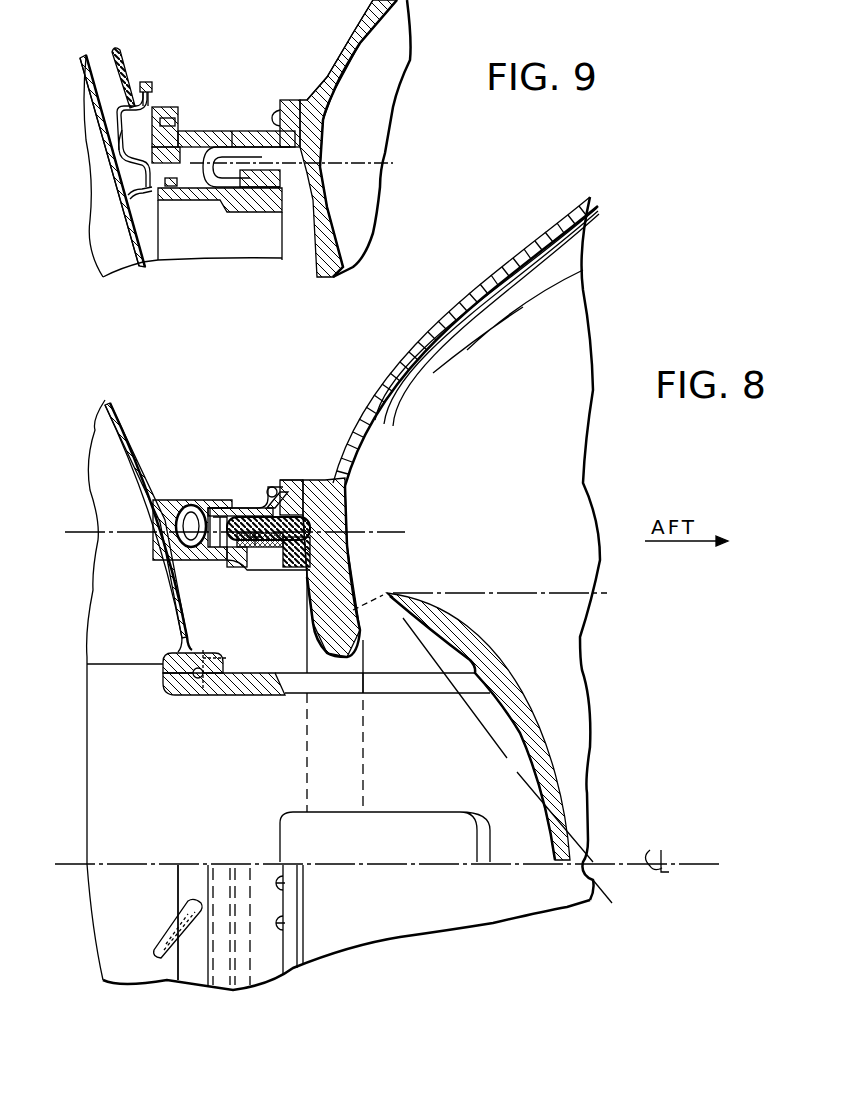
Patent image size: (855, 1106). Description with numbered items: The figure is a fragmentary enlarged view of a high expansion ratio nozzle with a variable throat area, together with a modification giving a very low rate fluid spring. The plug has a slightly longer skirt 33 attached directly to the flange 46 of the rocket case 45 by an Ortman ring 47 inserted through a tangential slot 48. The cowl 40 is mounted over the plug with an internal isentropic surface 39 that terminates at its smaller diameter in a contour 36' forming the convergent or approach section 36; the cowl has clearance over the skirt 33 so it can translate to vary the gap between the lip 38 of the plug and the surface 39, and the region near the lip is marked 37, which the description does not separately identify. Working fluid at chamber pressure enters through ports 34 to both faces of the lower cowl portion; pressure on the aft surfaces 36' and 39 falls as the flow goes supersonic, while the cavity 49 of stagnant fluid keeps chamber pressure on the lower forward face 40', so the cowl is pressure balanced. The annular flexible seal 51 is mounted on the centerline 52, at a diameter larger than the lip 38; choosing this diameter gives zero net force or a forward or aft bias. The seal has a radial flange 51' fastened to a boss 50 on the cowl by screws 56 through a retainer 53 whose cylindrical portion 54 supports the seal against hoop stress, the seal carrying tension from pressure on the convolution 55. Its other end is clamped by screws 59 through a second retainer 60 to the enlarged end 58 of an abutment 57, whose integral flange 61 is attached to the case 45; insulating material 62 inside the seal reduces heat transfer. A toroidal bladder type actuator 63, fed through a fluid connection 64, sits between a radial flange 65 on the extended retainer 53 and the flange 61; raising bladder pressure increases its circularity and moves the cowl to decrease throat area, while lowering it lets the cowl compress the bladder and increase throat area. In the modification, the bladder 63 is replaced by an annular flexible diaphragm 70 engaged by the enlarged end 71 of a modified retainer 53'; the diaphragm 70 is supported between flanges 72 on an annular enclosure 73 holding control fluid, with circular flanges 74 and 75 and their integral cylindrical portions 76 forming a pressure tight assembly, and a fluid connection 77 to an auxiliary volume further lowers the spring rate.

In FIG. 8, the skirt 33 is at (165, 689).
In FIG. 8, the ports 34 is at (305, 694).
In FIG. 8, the convergent or approach section 36 is at (490, 727).
In FIG. 8, the contour 36' is at (387, 679).
In FIG. 8, the cowl lip 37 is at (385, 600).
In FIG. 8, the lip 38 is at (388, 593).
In FIG. 8, the internal isentropic surface 39 is at (365, 430).
In FIG. 8, the cowl 40 is at (461, 340).
In FIG. 8, the lower forward face surface 40' is at (318, 567).
In FIG. 8, the rocket case 45 is at (130, 447).
In FIG. 8, the flange 46 is at (170, 655).
In FIG. 8, the Ortman ring 47 is at (220, 690).
In FIG. 8, the tangential slot 48 is at (215, 661).
In FIG. 8, the cavity 49 is at (240, 637).
In FIG. 8, the boss 50 is at (300, 485).
In FIG. 9, the annular flexible seal 51 is at (236, 118).
In FIG. 8, the annular flexible seal 51 is at (220, 501).
In FIG. 8, the radial flange 51' is at (292, 446).
In FIG. 9, the centerline 52 is at (190, 161).
In FIG. 8, the centerline 52 is at (238, 528).
In FIG. 8, the retainer 53 is at (248, 474).
In FIG. 9, the retainer 53' is at (288, 107).
In FIG. 8, the cylindrical portion 54 is at (243, 505).
In FIG. 8, the convolution 55 is at (230, 515).
In FIG. 8, the screws 56 is at (268, 490).
In FIG. 8, the abutment 57 is at (183, 560).
In FIG. 8, the enlarged end 58 is at (255, 572).
In FIG. 8, the screws 59 is at (305, 545).
In FIG. 8, the second retainer 60 is at (305, 530).
In FIG. 8, the integral flange 61 is at (160, 547).
In FIG. 8, the insulating material 62 is at (305, 560).
In FIG. 8, the bladder type actuator 63 is at (190, 505).
In FIG. 8, the fluid connection 64 is at (172, 937).
In FIG. 8, the radial flange 65 is at (225, 570).
In FIG. 9, the annular flexible diaphragm 70 is at (178, 118).
In FIG. 9, the enlarged end 71 is at (185, 133).
In FIG. 9, the flanges 72 is at (140, 100).
In FIG. 9, the annular enclosure 73 is at (126, 150).
In FIG. 9, the circular flange 74 is at (158, 90).
In FIG. 9, the circular flange 75 is at (166, 200).
In FIG. 9, the cylindrical portions 76 is at (162, 108).
In FIG. 9, the fluid connection 77 is at (113, 52).